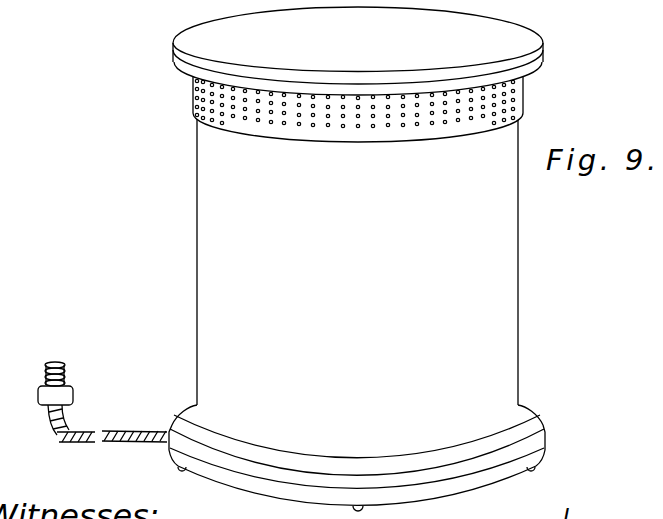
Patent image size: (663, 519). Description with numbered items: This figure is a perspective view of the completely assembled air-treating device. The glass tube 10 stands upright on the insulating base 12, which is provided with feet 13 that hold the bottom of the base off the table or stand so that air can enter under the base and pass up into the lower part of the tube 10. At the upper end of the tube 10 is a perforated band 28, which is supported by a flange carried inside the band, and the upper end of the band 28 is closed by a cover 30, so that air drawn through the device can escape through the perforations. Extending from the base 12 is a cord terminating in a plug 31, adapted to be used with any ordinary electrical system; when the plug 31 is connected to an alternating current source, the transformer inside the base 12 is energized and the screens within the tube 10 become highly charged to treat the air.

The glass tube 10 is at (507, 282).
The insulating base 12 is at (540, 432).
The feet 13 is at (183, 473).
The perforated band 28 is at (202, 105).
The cover 30 is at (543, 48).
The plug 31 is at (67, 372).